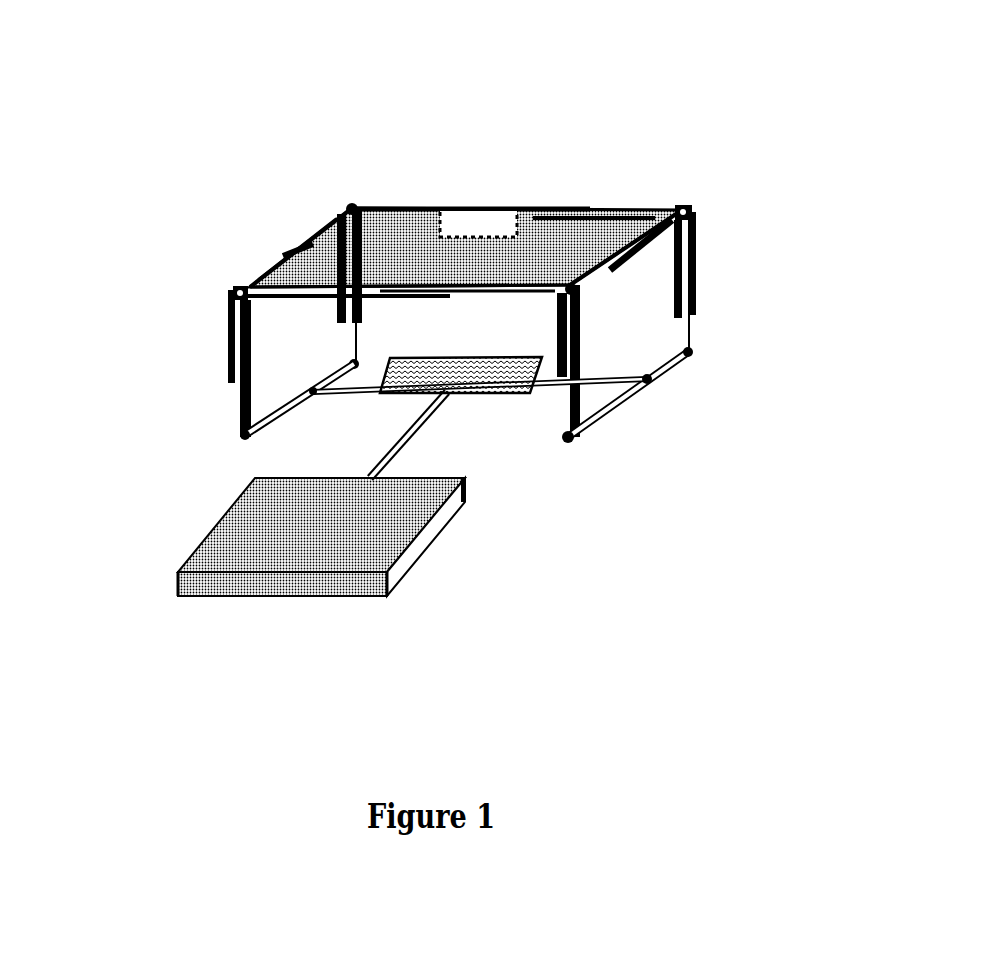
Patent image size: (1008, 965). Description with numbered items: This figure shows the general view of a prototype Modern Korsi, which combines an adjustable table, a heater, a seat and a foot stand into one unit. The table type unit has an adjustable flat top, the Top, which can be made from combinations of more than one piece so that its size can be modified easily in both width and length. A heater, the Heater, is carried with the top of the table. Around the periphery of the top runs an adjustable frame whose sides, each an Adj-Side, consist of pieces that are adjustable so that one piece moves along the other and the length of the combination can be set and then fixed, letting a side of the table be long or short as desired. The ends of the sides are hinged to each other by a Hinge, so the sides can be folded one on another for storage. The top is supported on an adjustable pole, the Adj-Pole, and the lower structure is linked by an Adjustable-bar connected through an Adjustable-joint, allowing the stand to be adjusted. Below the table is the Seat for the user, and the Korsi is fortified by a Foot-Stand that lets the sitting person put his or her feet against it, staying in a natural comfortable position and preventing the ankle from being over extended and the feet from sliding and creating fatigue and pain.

The adjustable flat top Top is at (395, 236).
The heater Heater is at (490, 209).
The adjustable side Adj-Side is at (275, 242).
The hinge Hinge is at (227, 282).
The adjustable pole Adj-Pole is at (222, 323).
The adjustable bar Adjustable-bar is at (267, 410).
The adjustable joint Adjustable-joint is at (642, 380).
The foot stand Foot-Stand is at (528, 392).
The seat Seat is at (330, 580).